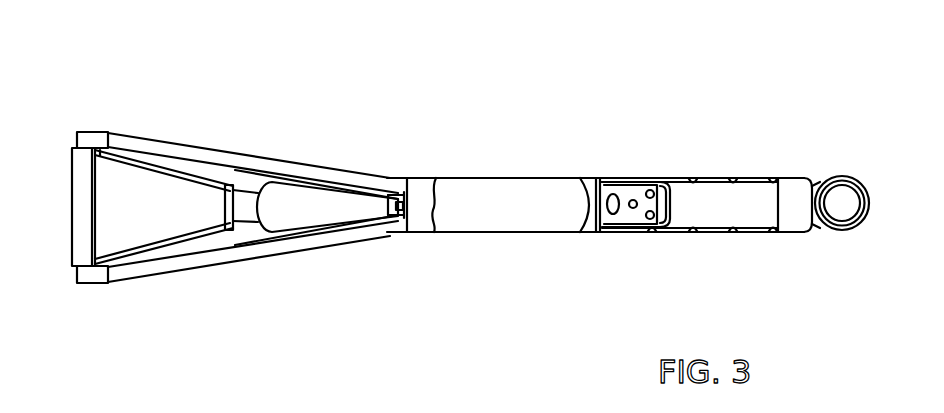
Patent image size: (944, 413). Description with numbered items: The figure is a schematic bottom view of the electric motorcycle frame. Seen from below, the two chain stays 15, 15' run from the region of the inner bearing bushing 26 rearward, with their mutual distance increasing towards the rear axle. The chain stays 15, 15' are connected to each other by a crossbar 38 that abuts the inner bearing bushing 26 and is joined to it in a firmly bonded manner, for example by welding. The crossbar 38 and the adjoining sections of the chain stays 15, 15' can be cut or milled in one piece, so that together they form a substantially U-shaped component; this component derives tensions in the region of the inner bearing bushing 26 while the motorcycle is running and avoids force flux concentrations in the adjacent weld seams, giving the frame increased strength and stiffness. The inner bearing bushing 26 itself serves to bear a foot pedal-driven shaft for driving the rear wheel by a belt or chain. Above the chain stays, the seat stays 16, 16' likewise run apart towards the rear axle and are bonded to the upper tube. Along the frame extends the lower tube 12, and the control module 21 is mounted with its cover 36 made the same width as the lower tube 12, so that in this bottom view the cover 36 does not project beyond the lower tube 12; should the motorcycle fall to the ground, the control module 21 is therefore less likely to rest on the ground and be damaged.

The lower tube 12 is at (491, 186).
The chain stay 15 is at (253, 150).
The chain stay 15' is at (253, 268).
The seat stay 16 is at (164, 185).
The seat stay 16' is at (164, 273).
The control module 21 is at (681, 235).
The inner bearing bushing 26 is at (421, 186).
The cover 36 is at (721, 187).
The crossbar 38 is at (396, 222).